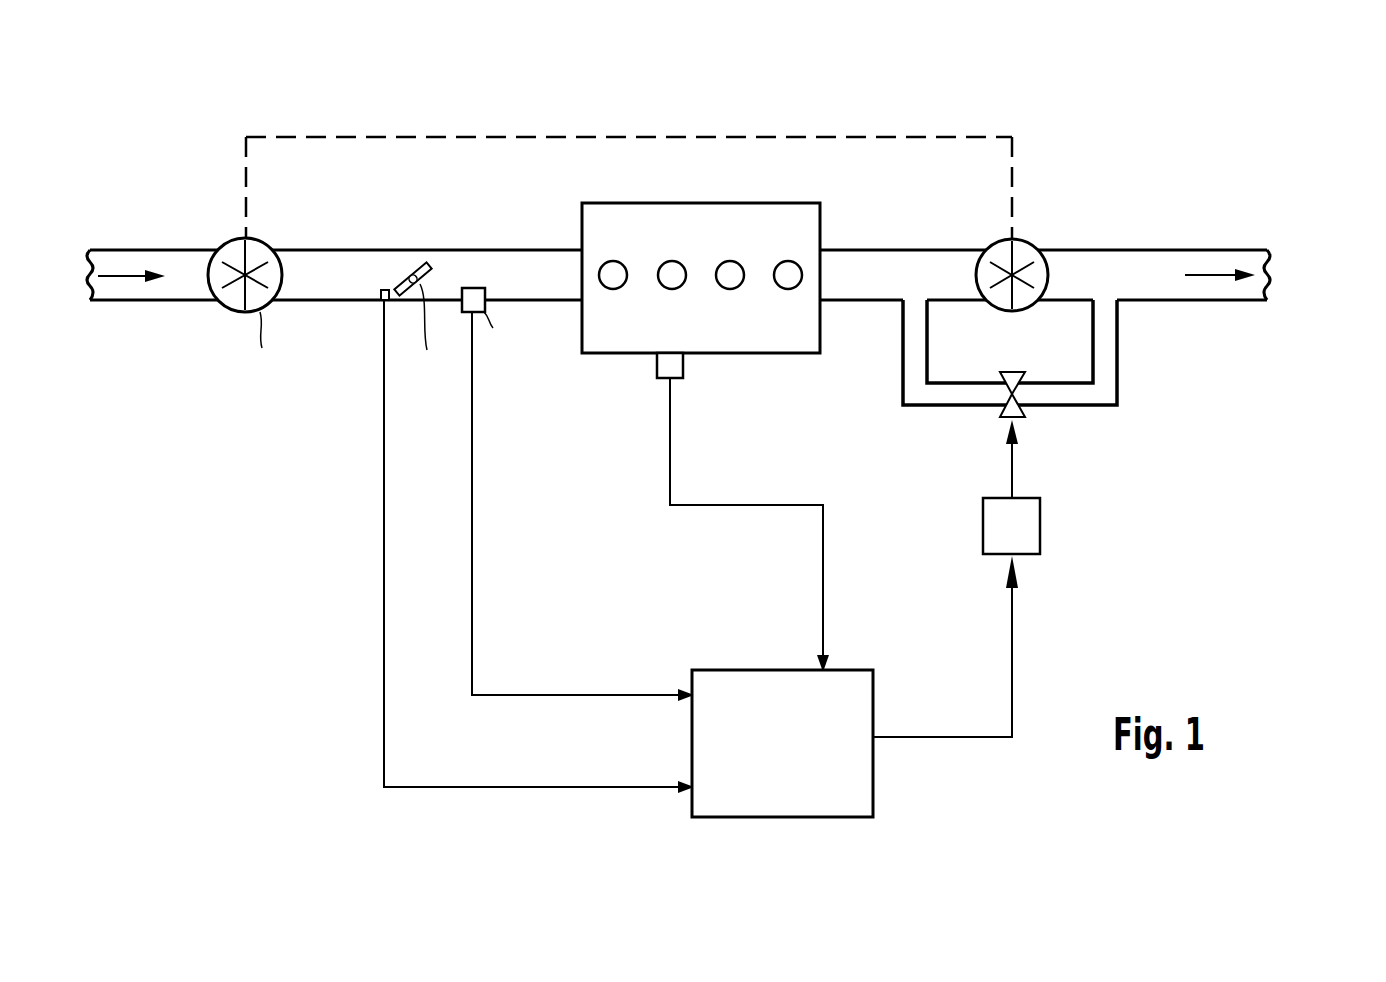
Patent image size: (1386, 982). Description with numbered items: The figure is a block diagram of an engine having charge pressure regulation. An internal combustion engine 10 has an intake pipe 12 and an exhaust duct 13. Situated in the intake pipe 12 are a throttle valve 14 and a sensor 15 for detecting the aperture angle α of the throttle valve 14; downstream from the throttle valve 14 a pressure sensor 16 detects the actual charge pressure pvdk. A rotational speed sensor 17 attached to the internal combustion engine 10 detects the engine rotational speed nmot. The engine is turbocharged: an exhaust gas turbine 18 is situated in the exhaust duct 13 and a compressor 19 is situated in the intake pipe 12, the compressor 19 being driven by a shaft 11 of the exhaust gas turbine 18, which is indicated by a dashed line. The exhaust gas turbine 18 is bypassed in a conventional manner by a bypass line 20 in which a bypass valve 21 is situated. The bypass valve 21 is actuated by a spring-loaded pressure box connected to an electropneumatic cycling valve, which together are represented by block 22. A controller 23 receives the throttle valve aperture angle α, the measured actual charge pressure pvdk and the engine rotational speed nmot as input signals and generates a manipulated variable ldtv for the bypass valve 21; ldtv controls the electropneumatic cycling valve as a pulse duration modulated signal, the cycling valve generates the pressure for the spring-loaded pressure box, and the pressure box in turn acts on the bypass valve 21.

The internal combustion engine 10 is at (820, 217).
The shaft 11 is at (590, 135).
The intake pipe 12 is at (141, 250).
The exhaust duct 13 is at (937, 250).
The throttle valve 14 is at (427, 264).
The sensor 15 is at (384, 290).
The pressure sensor 16 is at (474, 290).
The rotational speed sensor 17 is at (657, 365).
The exhaust gas turbine 18 is at (1034, 247).
The compressor 19 is at (228, 240).
The bypass line 20 is at (1105, 357).
The bypass valve 21 is at (1018, 418).
The block 22 is at (1040, 520).
The controller 23 is at (873, 775).